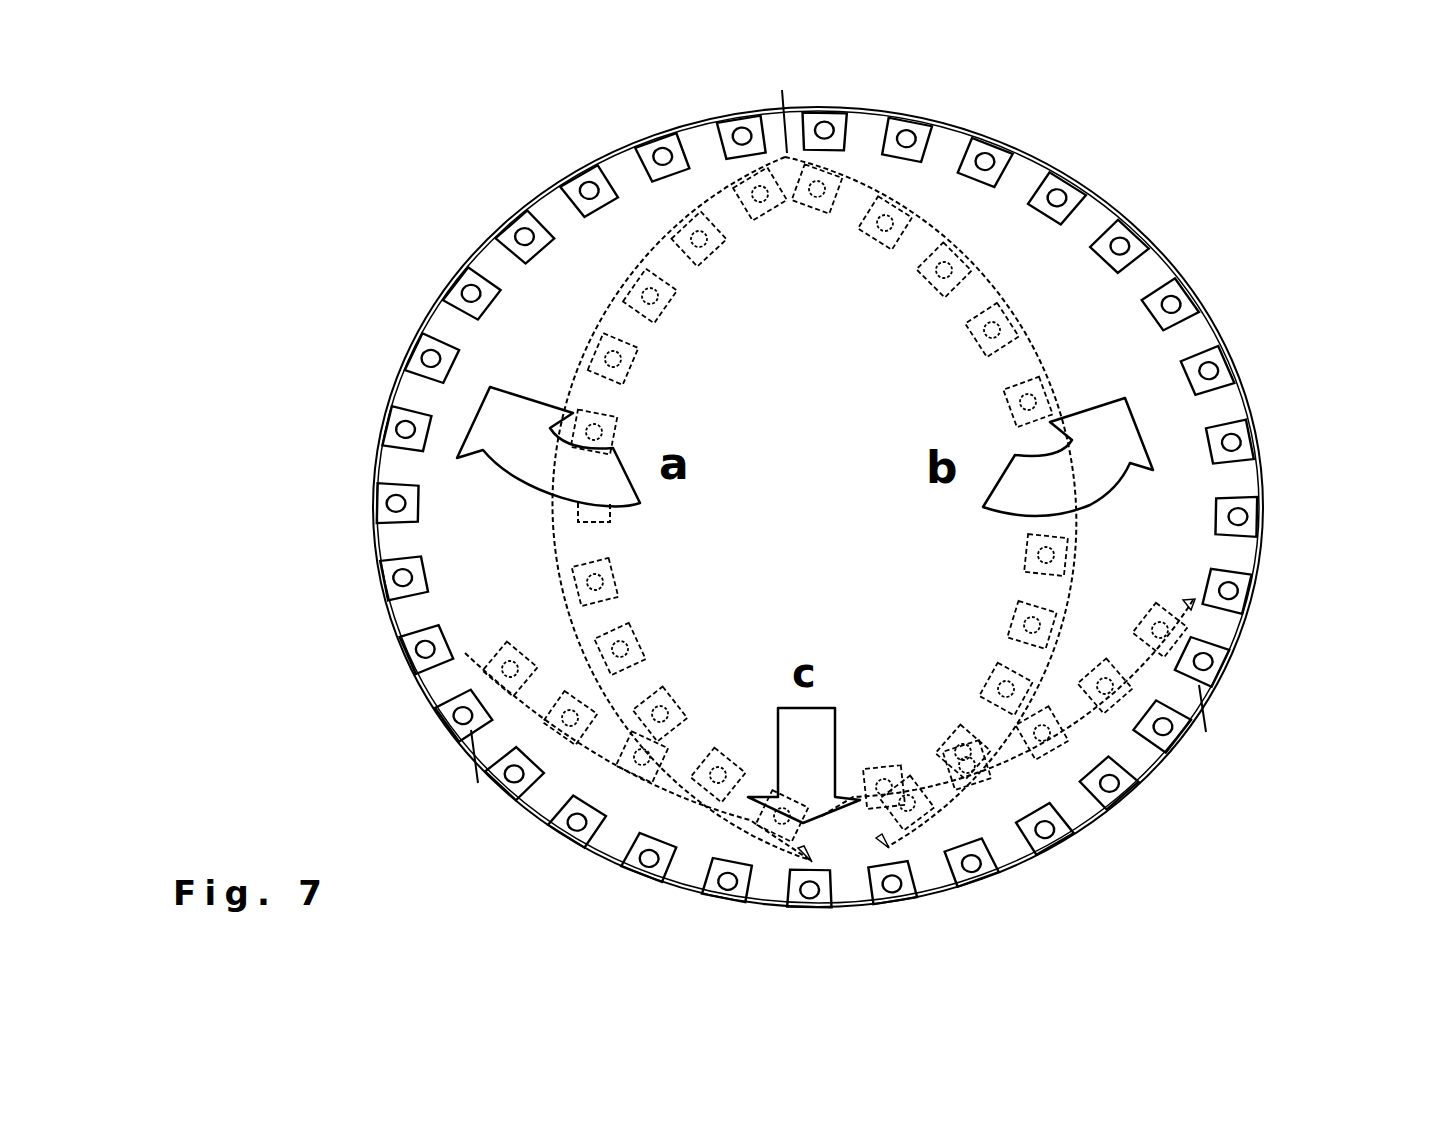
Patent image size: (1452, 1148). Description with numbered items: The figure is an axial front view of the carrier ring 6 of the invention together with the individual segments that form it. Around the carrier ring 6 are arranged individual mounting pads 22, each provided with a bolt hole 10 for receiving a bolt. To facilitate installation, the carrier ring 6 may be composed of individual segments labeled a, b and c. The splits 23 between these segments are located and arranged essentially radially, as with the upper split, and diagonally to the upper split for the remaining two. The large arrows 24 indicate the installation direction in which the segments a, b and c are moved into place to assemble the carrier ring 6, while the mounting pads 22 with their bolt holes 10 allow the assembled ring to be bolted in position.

The carrier ring 6 is at (1263, 487).
The bolt holes 10 is at (1232, 590).
The mounting pads 22 is at (1224, 434).
The splits 23 is at (745, 97).
The large arrows 24 is at (532, 447).